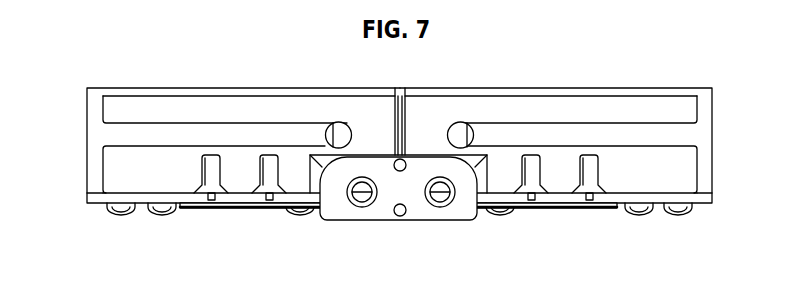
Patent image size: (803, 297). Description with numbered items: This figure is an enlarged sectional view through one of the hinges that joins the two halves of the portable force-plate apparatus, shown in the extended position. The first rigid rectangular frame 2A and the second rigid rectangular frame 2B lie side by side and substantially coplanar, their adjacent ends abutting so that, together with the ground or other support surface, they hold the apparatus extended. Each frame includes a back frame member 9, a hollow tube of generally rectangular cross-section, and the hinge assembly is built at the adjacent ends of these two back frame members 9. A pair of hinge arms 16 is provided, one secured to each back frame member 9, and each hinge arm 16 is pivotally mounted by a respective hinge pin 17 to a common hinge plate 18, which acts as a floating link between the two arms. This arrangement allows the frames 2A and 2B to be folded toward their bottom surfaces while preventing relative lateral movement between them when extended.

The first rigid rectangular frame 2A is at (96, 175).
The second rigid rectangular frame 2B is at (703, 172).
The back frame member 9 is at (247, 93).
The hinge arm 16 is at (168, 170).
The hinge pin 17 is at (360, 203).
The hinge plate 18 is at (459, 208).